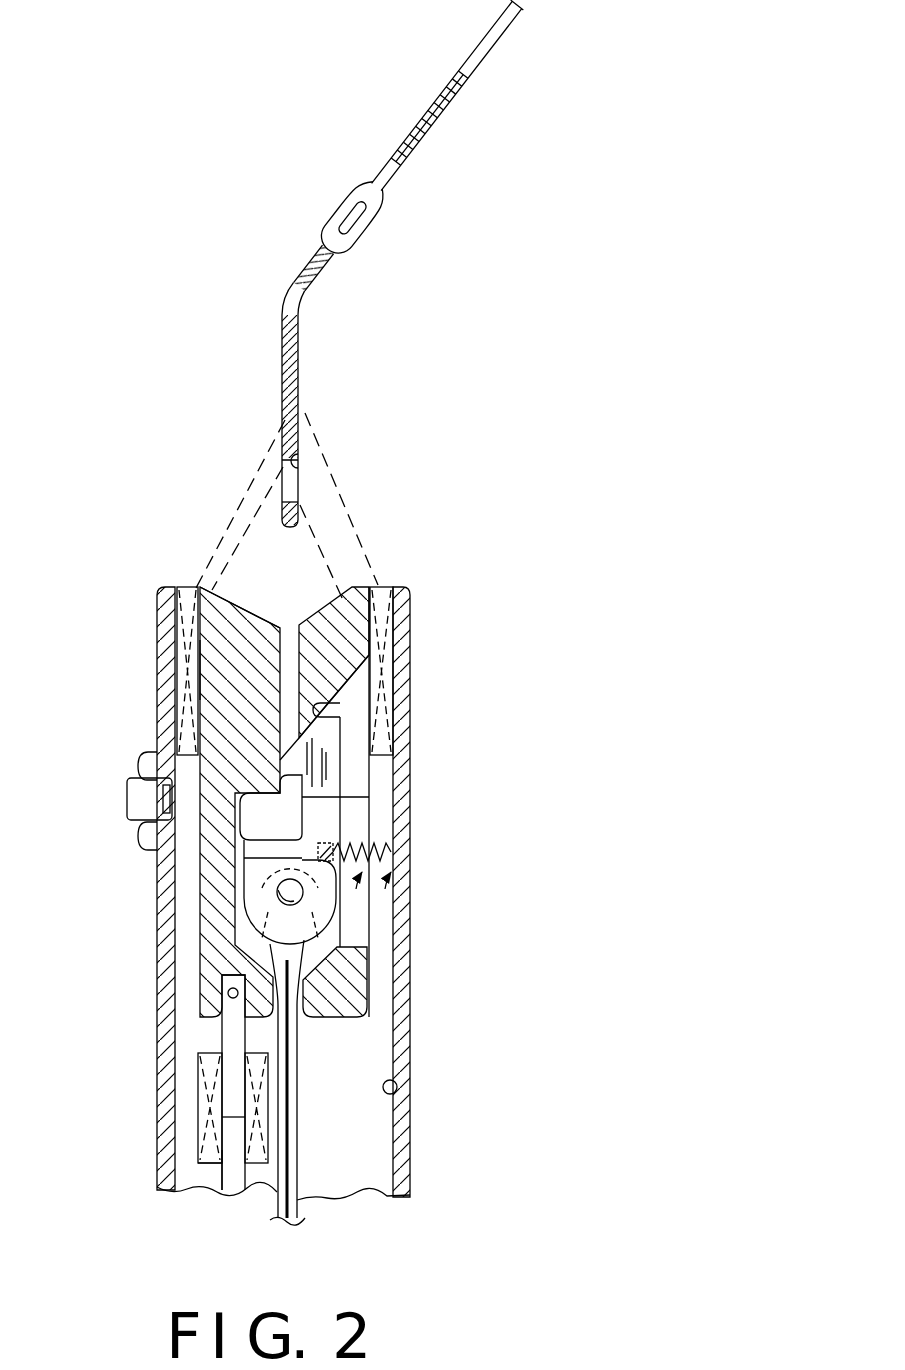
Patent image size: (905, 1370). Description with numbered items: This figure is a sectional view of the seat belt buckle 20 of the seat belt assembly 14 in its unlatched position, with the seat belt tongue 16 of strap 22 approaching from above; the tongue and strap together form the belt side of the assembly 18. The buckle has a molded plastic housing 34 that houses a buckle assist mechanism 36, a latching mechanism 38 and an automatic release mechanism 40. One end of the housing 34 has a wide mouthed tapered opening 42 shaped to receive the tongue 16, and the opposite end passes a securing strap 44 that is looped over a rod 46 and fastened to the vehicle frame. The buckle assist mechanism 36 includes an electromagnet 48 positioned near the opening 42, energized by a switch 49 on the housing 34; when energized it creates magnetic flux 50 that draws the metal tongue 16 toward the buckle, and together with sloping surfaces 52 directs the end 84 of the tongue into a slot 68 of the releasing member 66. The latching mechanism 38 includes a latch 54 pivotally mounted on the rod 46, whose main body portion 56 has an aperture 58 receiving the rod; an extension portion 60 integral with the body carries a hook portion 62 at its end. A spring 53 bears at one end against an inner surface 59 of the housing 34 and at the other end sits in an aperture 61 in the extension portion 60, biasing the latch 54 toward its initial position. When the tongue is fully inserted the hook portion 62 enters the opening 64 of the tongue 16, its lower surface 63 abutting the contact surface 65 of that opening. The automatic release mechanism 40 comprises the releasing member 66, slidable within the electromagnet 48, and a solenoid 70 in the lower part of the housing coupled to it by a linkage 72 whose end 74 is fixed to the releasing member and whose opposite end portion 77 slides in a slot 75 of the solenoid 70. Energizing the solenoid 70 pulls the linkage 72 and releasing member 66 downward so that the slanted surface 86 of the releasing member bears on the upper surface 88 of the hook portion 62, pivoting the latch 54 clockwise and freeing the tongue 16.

The seat belt assembly 14 is at (110, 300).
The seat belt tongue 16 is at (298, 350).
The needle assembly 18 is at (462, 165).
The seat belt buckle 20 is at (510, 715).
The strap 22 is at (490, 45).
The housing 34 is at (400, 1030).
The buckle assist mechanism 36 is at (404, 580).
The latching mechanism 38 is at (345, 898).
The automatic release mechanism 40 is at (190, 1071).
The wide mouthed tapered opening 42 is at (192, 588).
The securing strap 44 is at (303, 1200).
The rod 46 is at (278, 893).
The electromagnet 48 is at (385, 645).
The switch 49 is at (130, 790).
The magnetic flux 50 is at (320, 548).
The sloping surfaces 52 is at (308, 600).
The spring 53 is at (395, 890).
The latch 54 is at (357, 824).
The main body portion 56 is at (345, 915).
The aperture 58 is at (265, 907).
The inner surface 59 is at (400, 1090).
The extension portion 60 is at (317, 813).
The aperture 61 is at (250, 855).
The hook portion 62 is at (283, 757).
The lower surface 63 is at (303, 797).
The opening 64 is at (294, 463).
The contact surface 65 is at (295, 492).
The releasing member 66 is at (215, 708).
The slot 68 is at (200, 665).
The solenoid 70 is at (196, 1162).
The linkage 72 is at (233, 1035).
The end 74 is at (228, 993).
The slot 75 is at (228, 1158).
The opposite end portion 77 is at (233, 1123).
The end 84 is at (282, 542).
The slanted surface 86 is at (352, 698).
The upper surface 88 is at (340, 712).